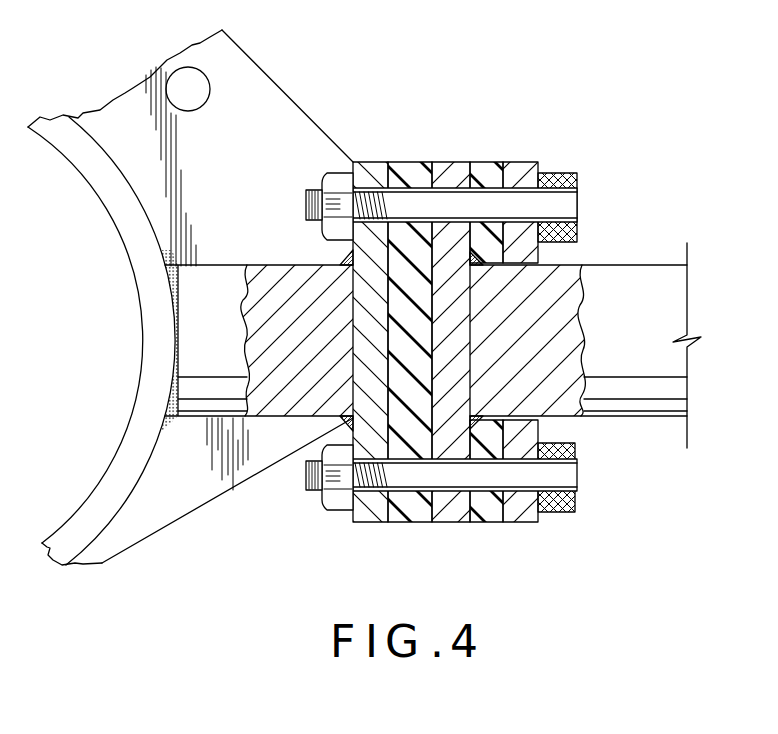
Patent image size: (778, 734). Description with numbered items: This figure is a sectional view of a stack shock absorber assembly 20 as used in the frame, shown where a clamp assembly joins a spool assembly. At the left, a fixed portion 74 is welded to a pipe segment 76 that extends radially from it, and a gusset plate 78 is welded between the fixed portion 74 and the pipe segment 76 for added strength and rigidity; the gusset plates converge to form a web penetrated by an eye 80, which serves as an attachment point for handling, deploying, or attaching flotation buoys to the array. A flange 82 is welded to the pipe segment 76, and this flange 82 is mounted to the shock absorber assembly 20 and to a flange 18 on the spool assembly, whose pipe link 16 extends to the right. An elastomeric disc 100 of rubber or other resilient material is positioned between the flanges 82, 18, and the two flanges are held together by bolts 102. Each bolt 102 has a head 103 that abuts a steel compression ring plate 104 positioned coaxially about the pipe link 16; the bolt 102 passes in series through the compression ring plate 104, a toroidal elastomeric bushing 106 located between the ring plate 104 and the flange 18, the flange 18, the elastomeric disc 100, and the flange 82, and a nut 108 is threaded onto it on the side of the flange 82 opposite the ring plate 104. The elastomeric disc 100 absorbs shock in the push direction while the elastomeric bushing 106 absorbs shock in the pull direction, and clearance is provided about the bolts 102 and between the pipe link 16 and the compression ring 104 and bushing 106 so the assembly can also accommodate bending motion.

The pipe link 16 is at (655, 280).
The flange 18 is at (452, 177).
The shock absorber assembly 20 is at (586, 66).
The fixed portion 74 is at (115, 192).
The pipe segment 76 is at (220, 273).
The gusset plate 78 is at (262, 132).
The eye 80 is at (208, 93).
The flange 82 is at (370, 515).
The elastomeric disc 100 is at (407, 177).
The bolt 102 is at (361, 176).
The head 103 is at (573, 173).
The compression ring plate 104 is at (515, 172).
The elastomeric bushing 106 is at (490, 170).
The nut 108 is at (338, 503).